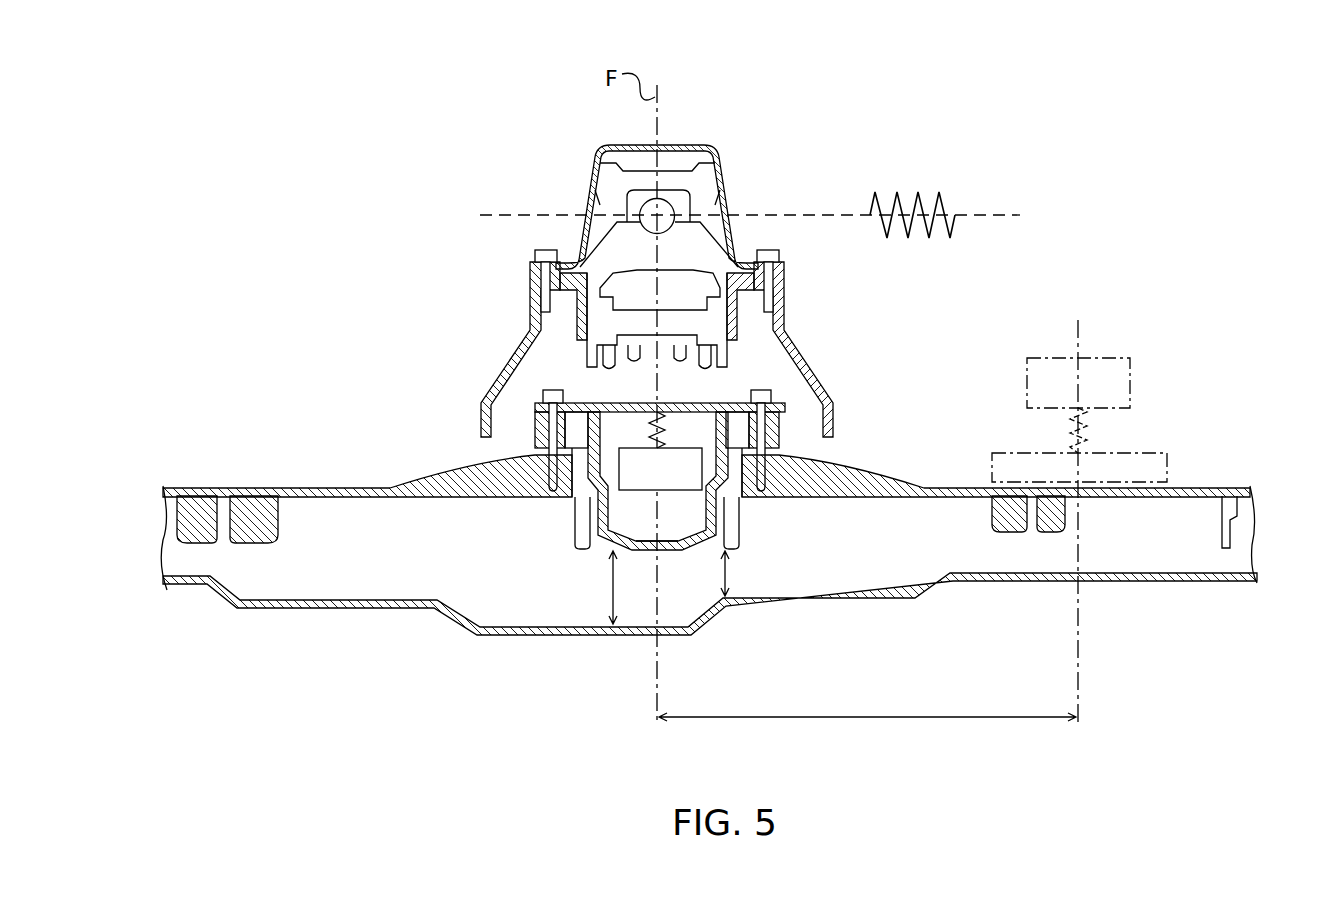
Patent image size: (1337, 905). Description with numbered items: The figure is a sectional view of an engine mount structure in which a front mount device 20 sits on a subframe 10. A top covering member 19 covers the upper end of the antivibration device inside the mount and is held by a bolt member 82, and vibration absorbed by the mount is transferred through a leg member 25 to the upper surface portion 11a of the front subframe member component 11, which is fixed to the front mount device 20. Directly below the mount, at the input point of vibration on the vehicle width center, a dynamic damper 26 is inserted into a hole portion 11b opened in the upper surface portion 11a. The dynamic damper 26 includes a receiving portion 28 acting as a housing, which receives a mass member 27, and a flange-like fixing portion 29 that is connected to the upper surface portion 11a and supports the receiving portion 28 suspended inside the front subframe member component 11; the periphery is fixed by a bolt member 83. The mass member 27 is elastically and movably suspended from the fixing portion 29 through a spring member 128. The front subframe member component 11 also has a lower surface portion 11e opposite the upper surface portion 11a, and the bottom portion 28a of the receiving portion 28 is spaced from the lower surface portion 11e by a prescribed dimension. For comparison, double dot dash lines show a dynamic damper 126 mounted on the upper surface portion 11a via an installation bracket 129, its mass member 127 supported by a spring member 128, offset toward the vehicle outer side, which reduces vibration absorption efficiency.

The subframe 10 is at (1232, 615).
The front subframe member component 11 is at (1157, 586).
The upper surface portion 11a is at (1212, 488).
The hole portion 11b is at (736, 527).
The lower surface portion 11e is at (768, 598).
The top covering member 19 is at (680, 143).
The front mount device 20 is at (732, 126).
The leg member 25 is at (800, 332).
The dynamic damper 26 is at (900, 378).
The mass member 27 is at (619, 470).
The receiving portion 28 is at (738, 462).
The bottom portion 28a is at (665, 549).
The fixing portion 29 is at (786, 410).
The bolt member 82 is at (543, 252).
The bolt member 83 is at (553, 392).
The dynamic damper 126 is at (1253, 355).
The mass member 127 is at (1110, 355).
The spring member 128 is at (655, 440).
The installation bracket 129 is at (1167, 467).